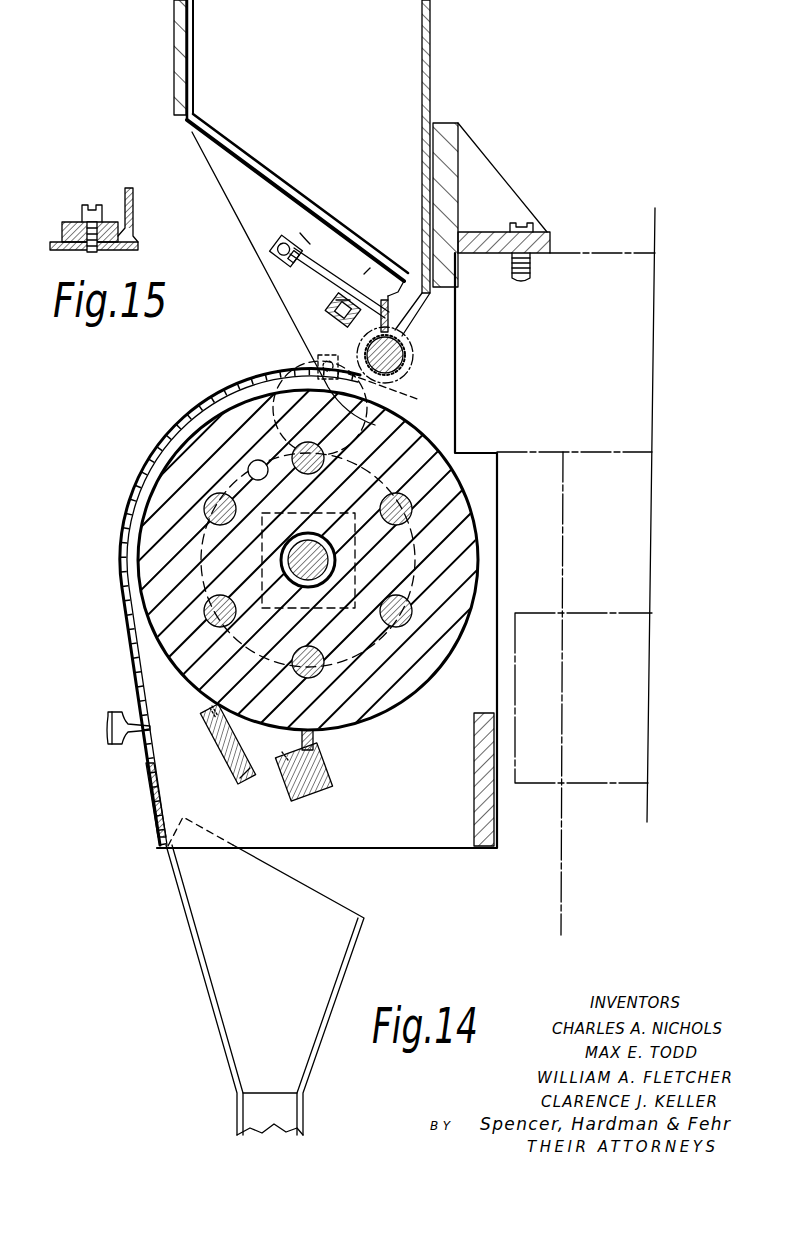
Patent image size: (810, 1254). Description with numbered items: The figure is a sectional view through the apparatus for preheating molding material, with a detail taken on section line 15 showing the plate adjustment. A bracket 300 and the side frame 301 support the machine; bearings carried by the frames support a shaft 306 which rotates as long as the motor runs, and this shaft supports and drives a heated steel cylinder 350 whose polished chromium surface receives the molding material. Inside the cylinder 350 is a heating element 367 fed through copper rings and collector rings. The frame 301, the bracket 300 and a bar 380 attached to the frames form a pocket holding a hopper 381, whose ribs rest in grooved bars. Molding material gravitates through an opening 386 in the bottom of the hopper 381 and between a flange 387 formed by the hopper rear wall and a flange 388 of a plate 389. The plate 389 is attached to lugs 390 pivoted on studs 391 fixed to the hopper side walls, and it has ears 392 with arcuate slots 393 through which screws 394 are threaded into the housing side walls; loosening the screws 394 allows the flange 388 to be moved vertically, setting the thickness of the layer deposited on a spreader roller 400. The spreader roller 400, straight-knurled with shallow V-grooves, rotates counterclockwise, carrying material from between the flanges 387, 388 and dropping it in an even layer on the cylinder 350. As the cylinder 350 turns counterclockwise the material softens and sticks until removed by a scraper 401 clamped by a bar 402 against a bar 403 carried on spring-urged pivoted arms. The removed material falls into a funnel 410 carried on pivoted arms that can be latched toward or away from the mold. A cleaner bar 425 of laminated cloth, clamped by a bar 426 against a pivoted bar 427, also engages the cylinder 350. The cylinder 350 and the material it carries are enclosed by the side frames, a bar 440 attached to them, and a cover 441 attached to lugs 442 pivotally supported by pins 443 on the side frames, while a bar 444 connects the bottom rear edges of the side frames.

In FIG. 14, the section line 15— 15 is at (378, 282).
In FIG. 14, the bracket 300 is at (490, 172).
In FIG. 14, the frame 301 is at (200, 146).
In FIG. 14, the shaft 306 is at (308, 546).
In FIG. 14, the heated steel cylinder 350 is at (428, 676).
In FIG. 14, the heating element 367 is at (412, 509).
In FIG. 14, the bar 380 is at (180, 37).
In FIG. 14, the hopper 381 is at (194, 60).
In FIG. 14, the opening 386 is at (398, 268).
In FIG. 14, the flange 387 is at (456, 312).
In FIG. 14, the flange 388 is at (395, 332).
In FIG. 14, the plate 389 is at (285, 272).
In FIG. 14, the lugs 390 is at (300, 236).
In FIG. 14, the studs 391 is at (284, 240).
In FIG. 15, the ears 392 is at (64, 224).
In FIG. 14, the ears 392 is at (330, 306).
In FIG. 15, the arcuate slots 393 is at (122, 232).
In FIG. 14, the arcuate slots 393 is at (336, 312).
In FIG. 15, the screws 394 is at (90, 204).
In FIG. 14, the screws 394 is at (368, 276).
In FIG. 14, the spreader roller 400 is at (393, 366).
In FIG. 14, the scraper 401 is at (210, 710).
In FIG. 14, the bar 402 is at (215, 742).
In FIG. 14, the bar 403 is at (246, 782).
In FIG. 14, the funnel 410 is at (176, 892).
In FIG. 14, the cleaner bar 425 is at (315, 740).
In FIG. 14, the bar 426 is at (282, 792).
In FIG. 14, the bar 427 is at (322, 782).
In FIG. 14, the bar 440 is at (148, 788).
In FIG. 14, the cover 441 is at (128, 640).
In FIG. 14, the lugs 442 is at (318, 360).
In FIG. 14, the pins 443 is at (392, 400).
In FIG. 14, the bar 444 is at (470, 852).